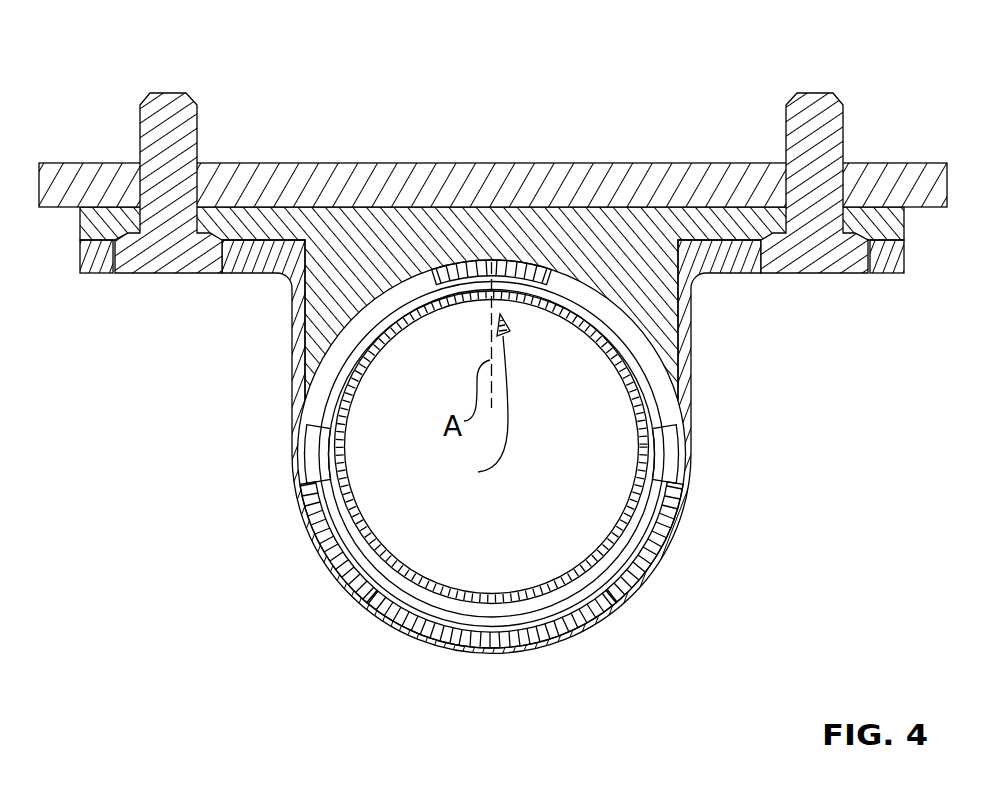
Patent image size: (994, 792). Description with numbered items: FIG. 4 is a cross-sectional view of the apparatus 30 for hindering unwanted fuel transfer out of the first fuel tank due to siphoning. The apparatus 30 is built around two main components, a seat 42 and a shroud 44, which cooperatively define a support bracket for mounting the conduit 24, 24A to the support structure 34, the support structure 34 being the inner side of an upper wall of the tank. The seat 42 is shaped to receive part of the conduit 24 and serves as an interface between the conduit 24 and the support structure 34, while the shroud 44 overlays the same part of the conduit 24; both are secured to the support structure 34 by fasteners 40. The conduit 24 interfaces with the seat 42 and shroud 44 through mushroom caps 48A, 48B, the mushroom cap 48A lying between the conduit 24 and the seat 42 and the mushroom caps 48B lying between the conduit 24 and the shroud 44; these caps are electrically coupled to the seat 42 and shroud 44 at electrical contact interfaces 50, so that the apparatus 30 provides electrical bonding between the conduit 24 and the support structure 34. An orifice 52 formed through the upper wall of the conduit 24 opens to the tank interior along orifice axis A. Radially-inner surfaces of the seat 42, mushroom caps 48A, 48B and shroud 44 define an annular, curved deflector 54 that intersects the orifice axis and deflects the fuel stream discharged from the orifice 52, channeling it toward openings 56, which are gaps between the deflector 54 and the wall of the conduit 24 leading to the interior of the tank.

The conduit 24 is at (591, 447).
The bearing outer race 24A is at (645, 457).
The apparatus 30 is at (227, 372).
The support structure 34 is at (114, 160).
The fasteners 40 is at (141, 125).
The seat 42 is at (330, 230).
The shroud 44 is at (292, 455).
The mushroom cap 48A is at (458, 272).
The mushroom caps 48B is at (355, 558).
The electrical contact interfaces 50 is at (540, 295).
The orifice 52 is at (475, 404).
The deflector 54 is at (476, 284).
The openings 56 is at (352, 379).